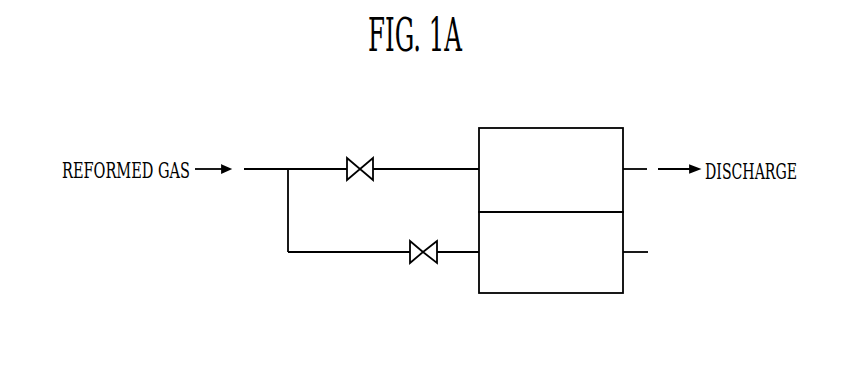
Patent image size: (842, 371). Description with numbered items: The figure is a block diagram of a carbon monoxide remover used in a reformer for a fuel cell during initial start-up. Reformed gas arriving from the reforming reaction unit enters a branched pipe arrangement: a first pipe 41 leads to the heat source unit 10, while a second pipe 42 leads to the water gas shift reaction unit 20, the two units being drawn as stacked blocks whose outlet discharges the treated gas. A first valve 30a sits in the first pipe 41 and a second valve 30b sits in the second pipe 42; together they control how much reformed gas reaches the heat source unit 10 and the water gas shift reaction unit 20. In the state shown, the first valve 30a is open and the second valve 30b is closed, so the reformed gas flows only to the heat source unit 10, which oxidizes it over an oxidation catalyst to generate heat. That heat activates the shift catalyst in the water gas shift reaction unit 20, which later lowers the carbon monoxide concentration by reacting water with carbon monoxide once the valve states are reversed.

The heat source unit 10 is at (590, 128).
The water gas shift reaction unit 20 is at (550, 295).
The first pipe 41 is at (310, 168).
The second pipe 42 is at (319, 254).
The first valve 30a is at (367, 157).
The second valve 30b is at (410, 263).